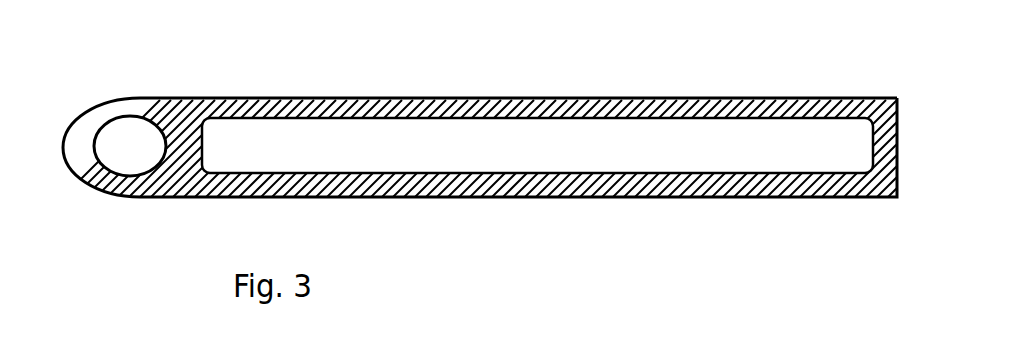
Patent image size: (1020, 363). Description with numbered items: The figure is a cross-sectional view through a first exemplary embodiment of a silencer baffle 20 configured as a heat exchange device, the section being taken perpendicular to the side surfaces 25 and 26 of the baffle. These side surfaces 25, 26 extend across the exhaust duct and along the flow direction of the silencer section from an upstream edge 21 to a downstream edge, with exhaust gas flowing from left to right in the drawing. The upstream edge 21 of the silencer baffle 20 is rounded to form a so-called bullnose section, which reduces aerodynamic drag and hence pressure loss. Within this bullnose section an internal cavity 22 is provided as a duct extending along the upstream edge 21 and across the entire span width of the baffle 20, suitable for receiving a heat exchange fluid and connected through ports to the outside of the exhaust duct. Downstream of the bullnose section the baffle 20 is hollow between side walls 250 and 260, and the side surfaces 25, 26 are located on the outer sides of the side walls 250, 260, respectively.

The silencer baffle 20 is at (521, 84).
The upstream edge 21 is at (93, 117).
The internal cavity 22 is at (137, 147).
The side surface 26 is at (377, 97).
The side surface 25 is at (358, 198).
The side wall 260 is at (668, 107).
The side wall 250 is at (615, 188).